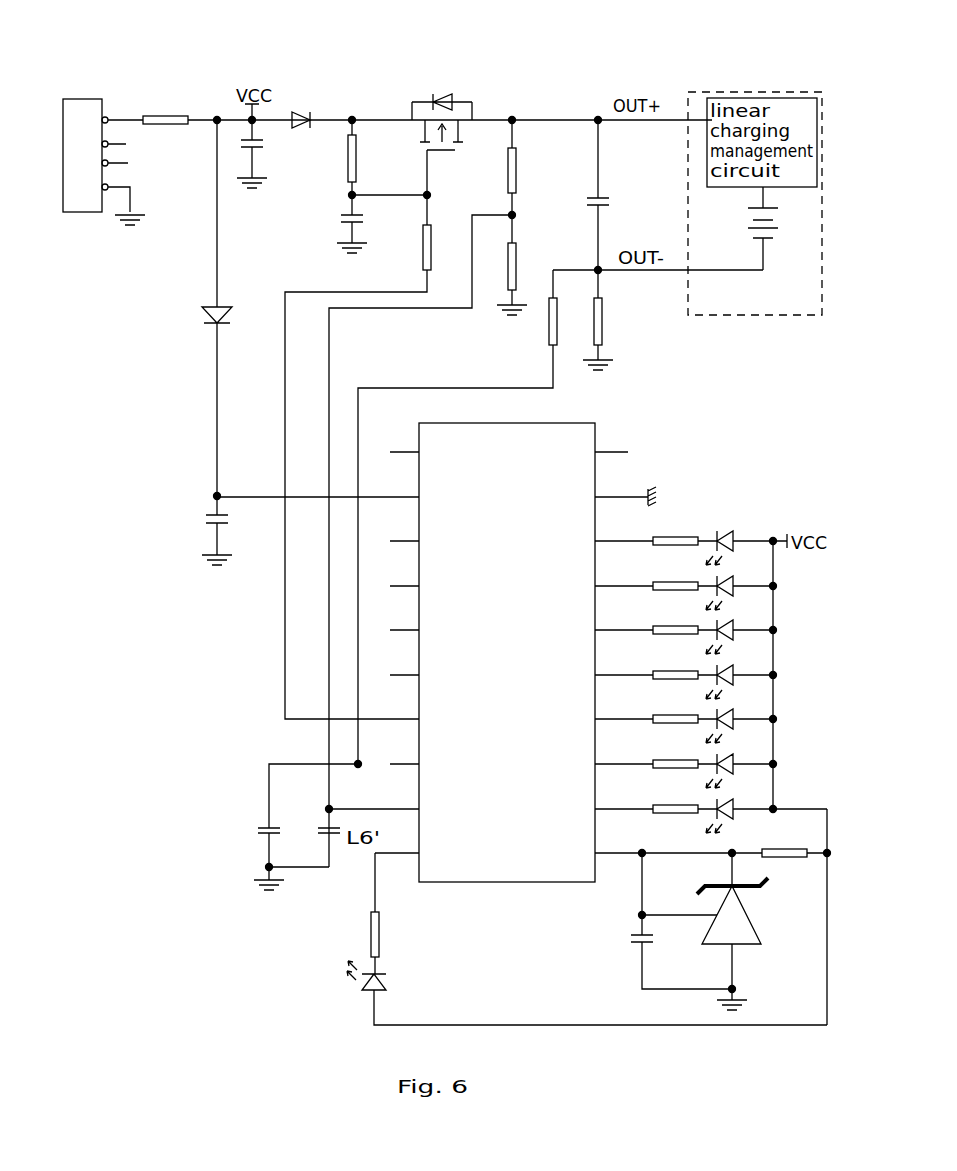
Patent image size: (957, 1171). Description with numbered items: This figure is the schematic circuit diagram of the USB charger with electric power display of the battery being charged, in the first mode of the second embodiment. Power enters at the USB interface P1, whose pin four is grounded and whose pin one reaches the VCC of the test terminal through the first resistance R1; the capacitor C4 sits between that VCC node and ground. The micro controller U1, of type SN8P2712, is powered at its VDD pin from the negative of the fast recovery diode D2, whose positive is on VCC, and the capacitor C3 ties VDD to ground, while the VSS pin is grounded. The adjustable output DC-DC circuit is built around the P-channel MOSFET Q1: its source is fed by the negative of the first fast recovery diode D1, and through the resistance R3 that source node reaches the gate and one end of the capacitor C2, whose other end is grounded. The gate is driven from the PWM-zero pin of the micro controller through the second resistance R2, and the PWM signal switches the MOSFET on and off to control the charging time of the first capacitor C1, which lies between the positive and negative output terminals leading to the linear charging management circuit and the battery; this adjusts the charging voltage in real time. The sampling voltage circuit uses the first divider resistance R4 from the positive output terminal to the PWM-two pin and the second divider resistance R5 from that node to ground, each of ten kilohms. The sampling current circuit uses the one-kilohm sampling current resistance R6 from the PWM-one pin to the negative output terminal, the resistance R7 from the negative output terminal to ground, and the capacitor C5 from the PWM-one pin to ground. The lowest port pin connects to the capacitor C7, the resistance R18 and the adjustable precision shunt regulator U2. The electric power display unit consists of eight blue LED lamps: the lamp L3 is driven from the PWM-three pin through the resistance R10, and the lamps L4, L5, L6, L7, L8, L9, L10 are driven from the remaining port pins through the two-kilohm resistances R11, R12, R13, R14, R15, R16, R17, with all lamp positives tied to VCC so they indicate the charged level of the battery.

The USB interface P1 is at (104, 150).
The first resistance R1 is at (165, 107).
The capacitor C4 is at (264, 154).
The first fast recovery diode D1 is at (309, 104).
The fast recovery diode D2 is at (232, 308).
The capacitor C3 is at (182, 527).
The MOSFET Q1 is at (442, 132).
The resistance R3 is at (372, 157).
The capacitor C2 is at (368, 224).
The second resistance R2 is at (358, 457).
The first divider resistance R4 is at (532, 167).
The second divider resistance R5 is at (526, 265).
The first capacitor C1 is at (616, 195).
The sampling current resistance R6 is at (476, 517).
The resistance R7 is at (611, 320).
The micro controller U1 is at (436, 649).
The capacitor C5 is at (306, 827).
The resistance R10 is at (399, 913).
The blue LED lamp L3 is at (587, 993).
The resistance R11 is at (656, 798).
The resistance R12 is at (656, 753).
The resistance R13 is at (656, 708).
The resistance R14 is at (656, 664).
The resistance R15 is at (656, 619).
The resistance R16 is at (656, 575).
The resistance R17 is at (656, 530).
The resistance R18 is at (788, 843).
The blue LED lamp L4 is at (766, 808).
The blue LED lamp L5 is at (740, 763).
The blue LED lamp L6 is at (740, 718).
The blue LED lamp L7 is at (740, 674).
The blue LED lamp L8 is at (740, 629).
The blue LED lamp L9 is at (740, 585).
The blue LED lamp L10 is at (745, 540).
The adjustable precision shunt regulator U2 is at (747, 931).
The capacitor C7 is at (681, 921).